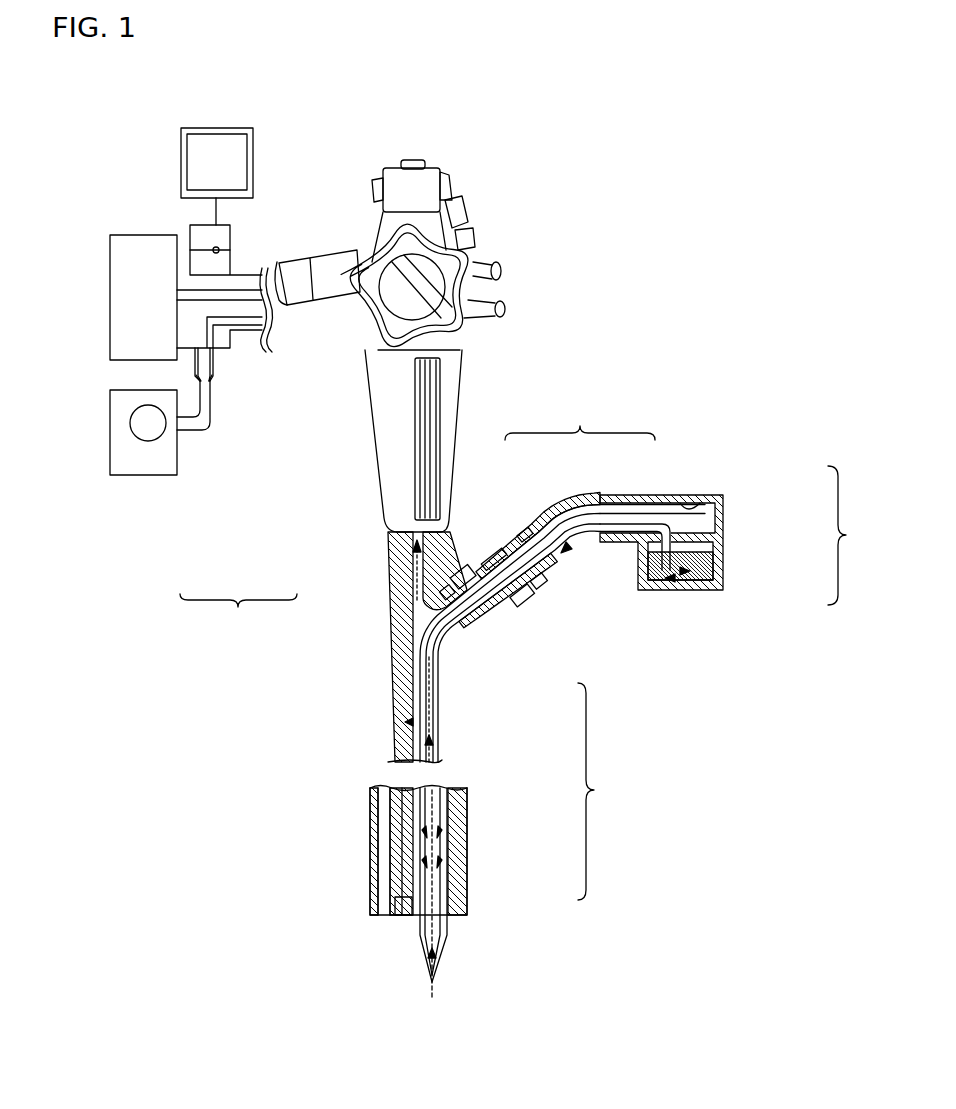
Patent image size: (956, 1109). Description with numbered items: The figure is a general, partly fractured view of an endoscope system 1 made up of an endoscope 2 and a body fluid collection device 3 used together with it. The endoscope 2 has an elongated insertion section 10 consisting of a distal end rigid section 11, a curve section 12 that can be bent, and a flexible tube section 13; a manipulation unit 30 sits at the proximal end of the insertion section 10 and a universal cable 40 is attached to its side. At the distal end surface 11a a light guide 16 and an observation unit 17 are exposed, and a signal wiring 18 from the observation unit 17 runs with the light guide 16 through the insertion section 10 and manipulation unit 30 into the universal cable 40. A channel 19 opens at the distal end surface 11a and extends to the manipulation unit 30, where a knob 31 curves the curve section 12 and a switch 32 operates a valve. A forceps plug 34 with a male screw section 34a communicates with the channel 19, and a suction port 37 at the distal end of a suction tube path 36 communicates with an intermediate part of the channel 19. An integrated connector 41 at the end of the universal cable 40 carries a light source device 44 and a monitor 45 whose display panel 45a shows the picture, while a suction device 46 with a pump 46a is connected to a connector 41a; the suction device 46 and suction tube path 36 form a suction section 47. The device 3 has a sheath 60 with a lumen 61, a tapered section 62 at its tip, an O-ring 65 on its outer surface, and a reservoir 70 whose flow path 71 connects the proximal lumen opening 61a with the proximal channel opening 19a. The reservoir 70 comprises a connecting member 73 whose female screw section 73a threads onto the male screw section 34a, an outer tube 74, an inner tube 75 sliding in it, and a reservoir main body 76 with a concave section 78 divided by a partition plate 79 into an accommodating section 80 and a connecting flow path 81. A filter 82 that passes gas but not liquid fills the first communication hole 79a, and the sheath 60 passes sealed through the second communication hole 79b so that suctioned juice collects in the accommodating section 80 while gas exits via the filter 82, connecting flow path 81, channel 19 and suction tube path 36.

The endoscope system 1 is at (614, 153).
The endoscope 2 is at (318, 181).
The body fluid collection device 3 is at (657, 461).
The insertion section 10 is at (494, 799).
The distal end rigid section 11 is at (466, 906).
The distal end surface 11a is at (457, 918).
The curve section 12 is at (466, 822).
The flexible tube section 13 is at (440, 722).
The light guide 16 is at (192, 290).
The observation unit 17 is at (404, 918).
The signal wiring 18 is at (394, 858).
The channel 19 is at (446, 858).
The opening of the proximal end portion of the channel 19a is at (452, 588).
The manipulation unit 30 is at (507, 257).
The knob 31 is at (393, 332).
The switch 32 is at (504, 307).
The forceps plug 34 is at (518, 606).
The male screw section 34a is at (539, 590).
The suction tube path 36 is at (388, 548).
The suction port 37 is at (397, 618).
The universal cable 40 is at (326, 270).
The integrated connector 41 is at (231, 349).
The connector 41a is at (211, 379).
The light source device 44 is at (110, 276).
The monitor 45 is at (181, 174).
The display panel 45a is at (190, 142).
The suction device 46 is at (152, 478).
The pump 46a is at (142, 435).
The suction section 47 is at (238, 615).
The sheath 60 is at (440, 705).
The lumen 61 is at (429, 966).
The opening of the proximal end portion of the lumen 61a is at (665, 584).
The tapered section 62 is at (446, 956).
The O-ring 65 is at (405, 724).
The reservoir 70 is at (580, 422).
The flow path 71 is at (698, 497).
The connecting member 73 is at (519, 536).
The female screw section 73a is at (470, 566).
The outer tube 74 is at (528, 530).
The inner tube 75 is at (583, 502).
The reservoir main body 76 is at (633, 496).
The concave section 78 is at (848, 535).
The partition plate 79 is at (691, 591).
The first communication hole 79a is at (698, 528).
The second communication hole 79b is at (569, 546).
The accommodating section 80 is at (713, 568).
The connecting flow path 81 is at (713, 512).
The filter 82 is at (698, 538).